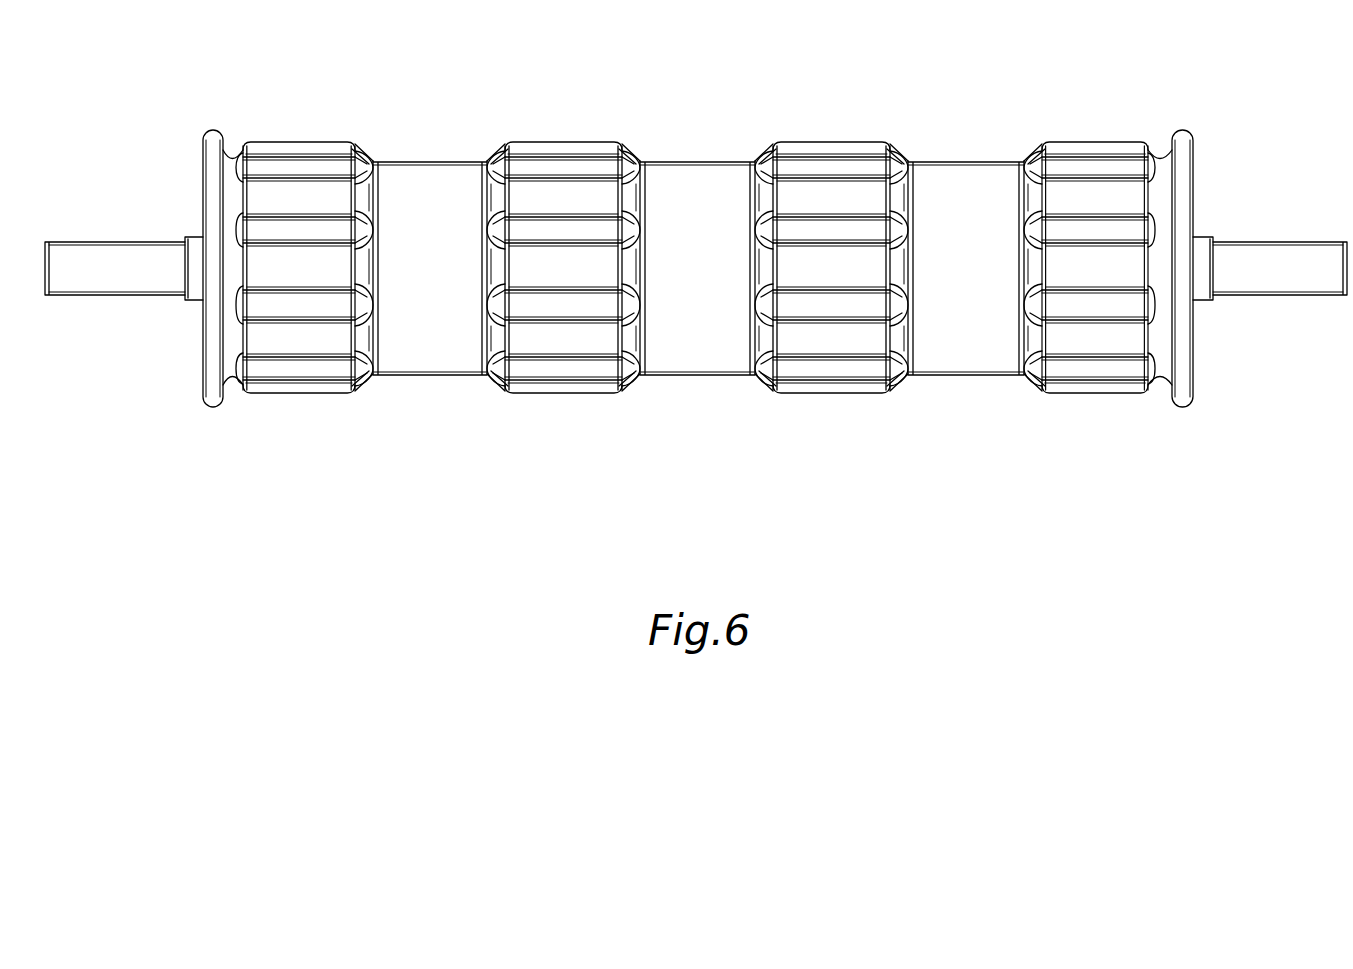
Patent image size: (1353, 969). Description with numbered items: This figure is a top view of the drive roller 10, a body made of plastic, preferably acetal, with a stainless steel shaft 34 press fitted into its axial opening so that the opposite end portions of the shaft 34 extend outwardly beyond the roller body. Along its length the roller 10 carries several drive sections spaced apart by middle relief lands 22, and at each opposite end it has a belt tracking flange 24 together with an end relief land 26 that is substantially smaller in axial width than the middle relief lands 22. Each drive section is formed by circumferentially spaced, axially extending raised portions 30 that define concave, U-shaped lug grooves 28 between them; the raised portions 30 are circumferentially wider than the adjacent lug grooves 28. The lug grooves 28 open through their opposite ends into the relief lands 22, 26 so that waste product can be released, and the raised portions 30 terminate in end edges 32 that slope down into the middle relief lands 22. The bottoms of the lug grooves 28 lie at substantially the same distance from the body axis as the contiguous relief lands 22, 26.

The drive roller 10 is at (900, 66).
The middle relief lands 22 is at (437, 367).
The belt tracking flange 24 is at (202, 172).
The end relief lands 26 is at (233, 158).
The lug grooves 28 is at (358, 234).
The raised portions 30 is at (313, 148).
The end edges 32 is at (492, 158).
The shaft 34 is at (1280, 243).